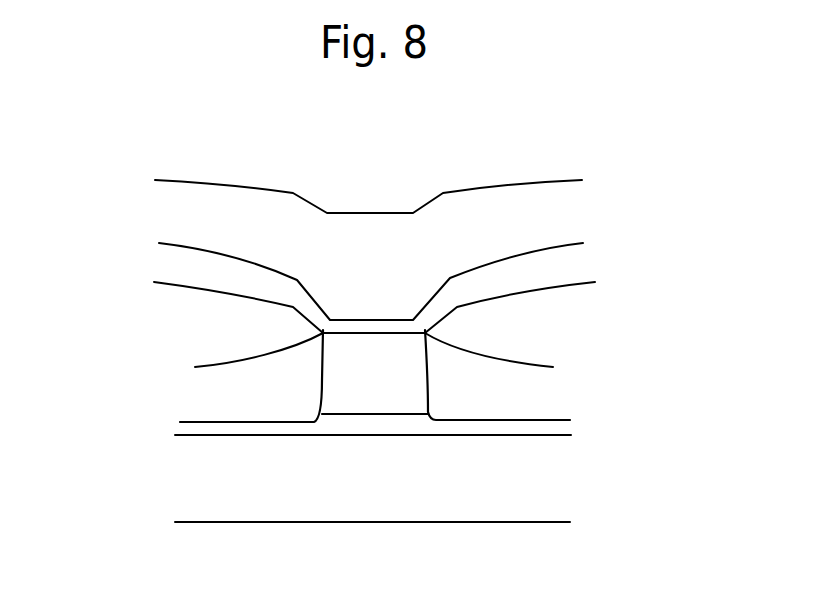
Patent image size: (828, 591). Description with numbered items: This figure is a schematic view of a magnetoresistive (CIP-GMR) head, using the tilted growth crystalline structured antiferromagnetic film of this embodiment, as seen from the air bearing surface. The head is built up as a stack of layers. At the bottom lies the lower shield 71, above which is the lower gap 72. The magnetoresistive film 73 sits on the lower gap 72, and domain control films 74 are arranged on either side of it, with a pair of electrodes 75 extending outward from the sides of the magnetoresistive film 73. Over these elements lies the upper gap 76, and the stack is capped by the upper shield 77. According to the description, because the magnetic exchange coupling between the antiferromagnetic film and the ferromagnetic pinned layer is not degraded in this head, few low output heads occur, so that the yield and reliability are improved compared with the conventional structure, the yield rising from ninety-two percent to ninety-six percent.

The lower shield 71 is at (543, 483).
The lower gap 72 is at (186, 426).
The magnetoresistive film 73 is at (337, 355).
The domain control films 74 is at (520, 402).
The pair of electrodes 75 is at (522, 348).
The upper gap 76 is at (558, 262).
The upper shield 77 is at (563, 197).